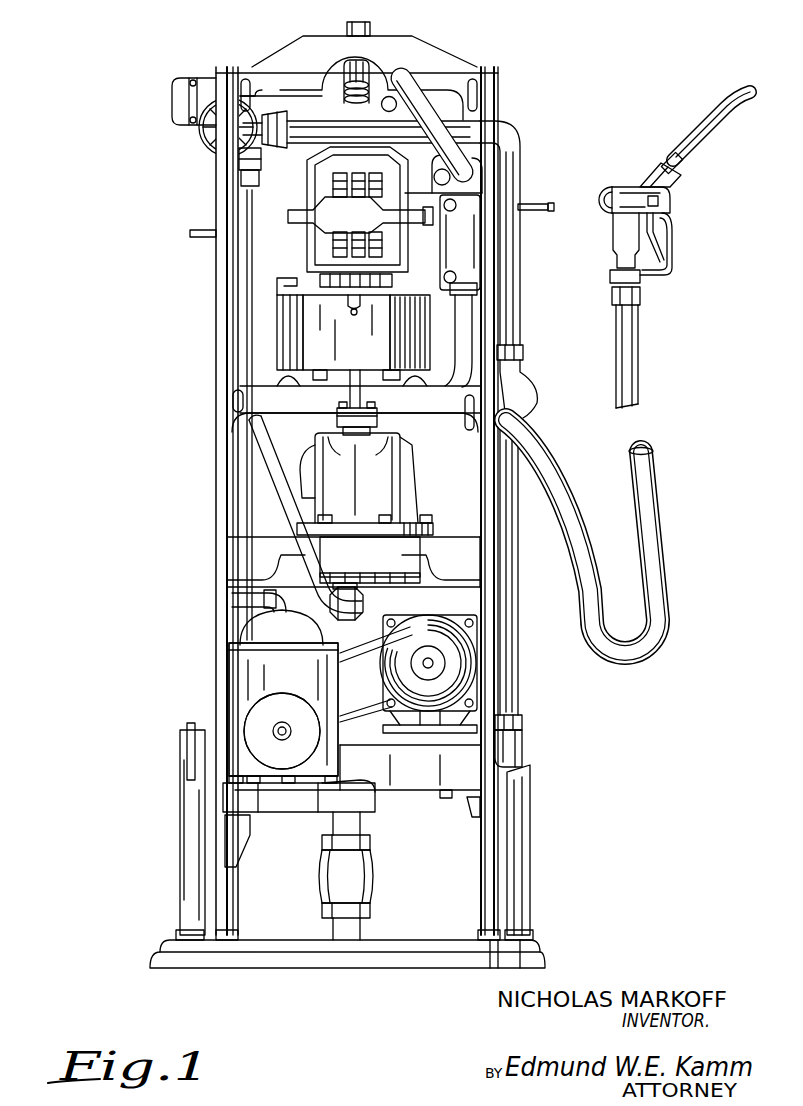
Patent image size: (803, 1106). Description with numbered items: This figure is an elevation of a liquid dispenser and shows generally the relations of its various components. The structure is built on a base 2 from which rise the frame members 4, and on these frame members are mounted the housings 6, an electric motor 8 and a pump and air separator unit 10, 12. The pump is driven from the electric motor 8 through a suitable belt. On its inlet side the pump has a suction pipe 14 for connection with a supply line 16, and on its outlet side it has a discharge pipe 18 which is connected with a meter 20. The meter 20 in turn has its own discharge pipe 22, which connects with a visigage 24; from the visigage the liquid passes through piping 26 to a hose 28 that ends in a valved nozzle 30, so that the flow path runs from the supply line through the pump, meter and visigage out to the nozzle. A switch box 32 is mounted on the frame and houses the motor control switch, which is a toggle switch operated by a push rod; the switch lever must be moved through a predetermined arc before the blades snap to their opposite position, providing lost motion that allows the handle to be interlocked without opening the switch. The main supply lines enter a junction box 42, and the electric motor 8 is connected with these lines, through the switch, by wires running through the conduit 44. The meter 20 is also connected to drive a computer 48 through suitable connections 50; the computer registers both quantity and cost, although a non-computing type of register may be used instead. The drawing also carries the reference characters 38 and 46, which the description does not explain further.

The base 2 is at (200, 953).
The frame members 4 is at (215, 367).
The housings 6 is at (530, 877).
The electric motor 8 is at (420, 614).
The pump and air separator unit 10 is at (240, 678).
The pump and air separator unit 12 is at (283, 709).
The suction pipe 14 is at (364, 873).
The supply line 16 is at (361, 922).
The discharge pipe 18 is at (305, 583).
The meter 20 is at (390, 490).
The discharge pipe 22 is at (281, 498).
The visigage 24 is at (172, 100).
The piping 26 is at (294, 123).
The hose 28 is at (655, 524).
The valved nozzle 30 is at (678, 178).
The switch box 32 is at (468, 234).
The bolt 38 is at (536, 203).
The junction box 42 is at (405, 782).
The conduit 44 is at (468, 367).
The lever 46 is at (452, 154).
The computer 48 is at (311, 183).
The connections 50 is at (341, 422).